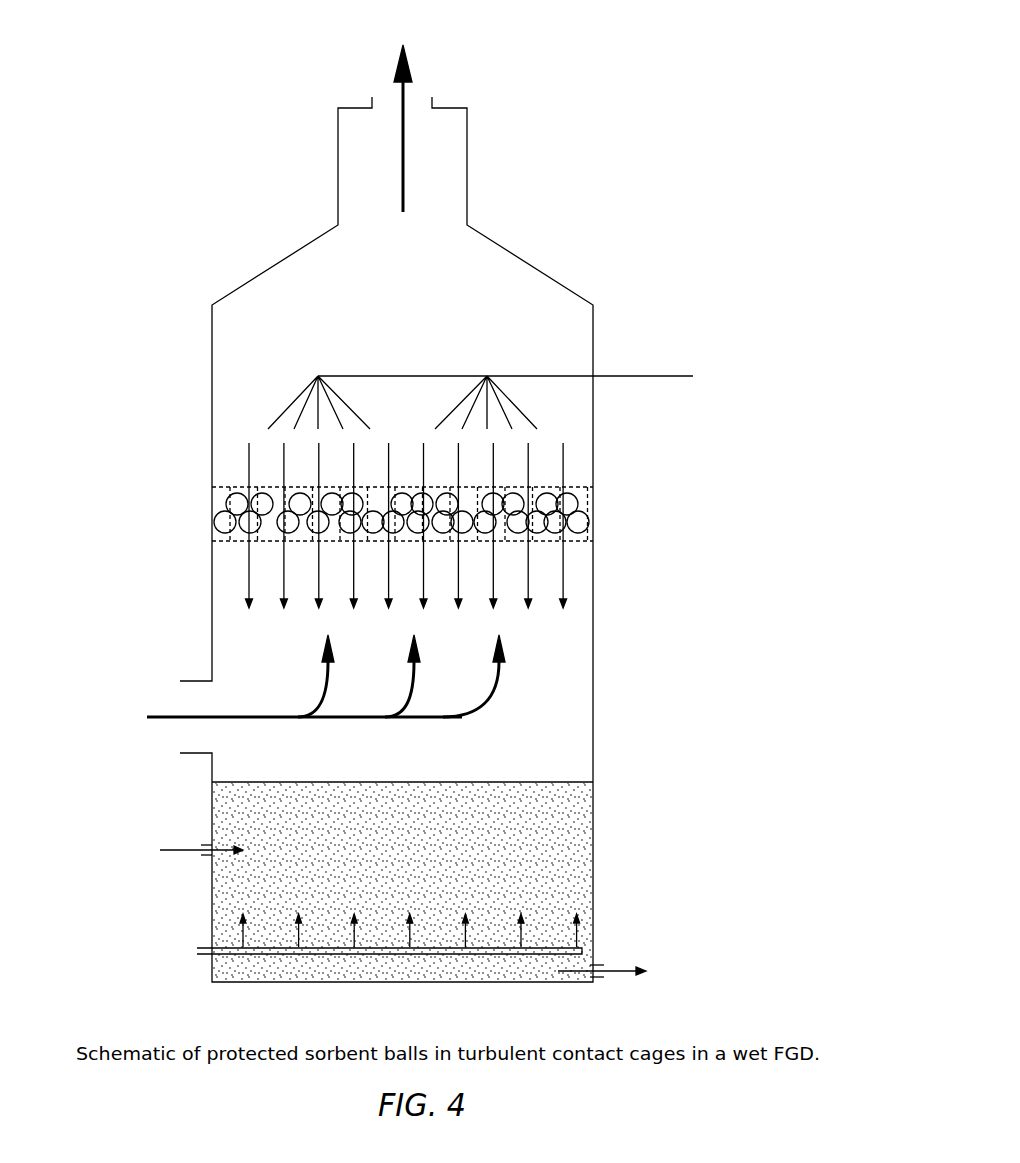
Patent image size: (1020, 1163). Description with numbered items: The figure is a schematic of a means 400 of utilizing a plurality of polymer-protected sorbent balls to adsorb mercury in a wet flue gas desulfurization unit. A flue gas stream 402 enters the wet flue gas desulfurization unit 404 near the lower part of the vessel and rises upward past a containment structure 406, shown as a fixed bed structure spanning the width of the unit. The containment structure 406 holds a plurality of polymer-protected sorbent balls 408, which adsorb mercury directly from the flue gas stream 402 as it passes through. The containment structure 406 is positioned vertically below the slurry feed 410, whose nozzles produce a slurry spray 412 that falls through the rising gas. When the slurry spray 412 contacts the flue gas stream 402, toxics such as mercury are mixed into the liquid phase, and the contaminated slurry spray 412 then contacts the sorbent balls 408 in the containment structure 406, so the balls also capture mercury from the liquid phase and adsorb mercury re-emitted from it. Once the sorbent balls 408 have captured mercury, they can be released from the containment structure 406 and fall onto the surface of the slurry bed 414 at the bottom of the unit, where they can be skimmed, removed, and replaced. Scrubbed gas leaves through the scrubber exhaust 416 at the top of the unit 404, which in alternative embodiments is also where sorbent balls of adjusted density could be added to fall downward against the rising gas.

The means of utilizing polymer-protected sorbent balls 400 is at (615, 54).
The flue gas stream 402 is at (172, 715).
The wet flue gas desulfurization unit 404 is at (527, 263).
The containment structure 406 is at (587, 488).
The polymer-protected sorbent balls 408 is at (588, 525).
The slurry feed 410 is at (530, 418).
The slurry spray 412 is at (566, 578).
The slurry bed 414 is at (567, 830).
The scrubber exhaust 416 is at (384, 100).